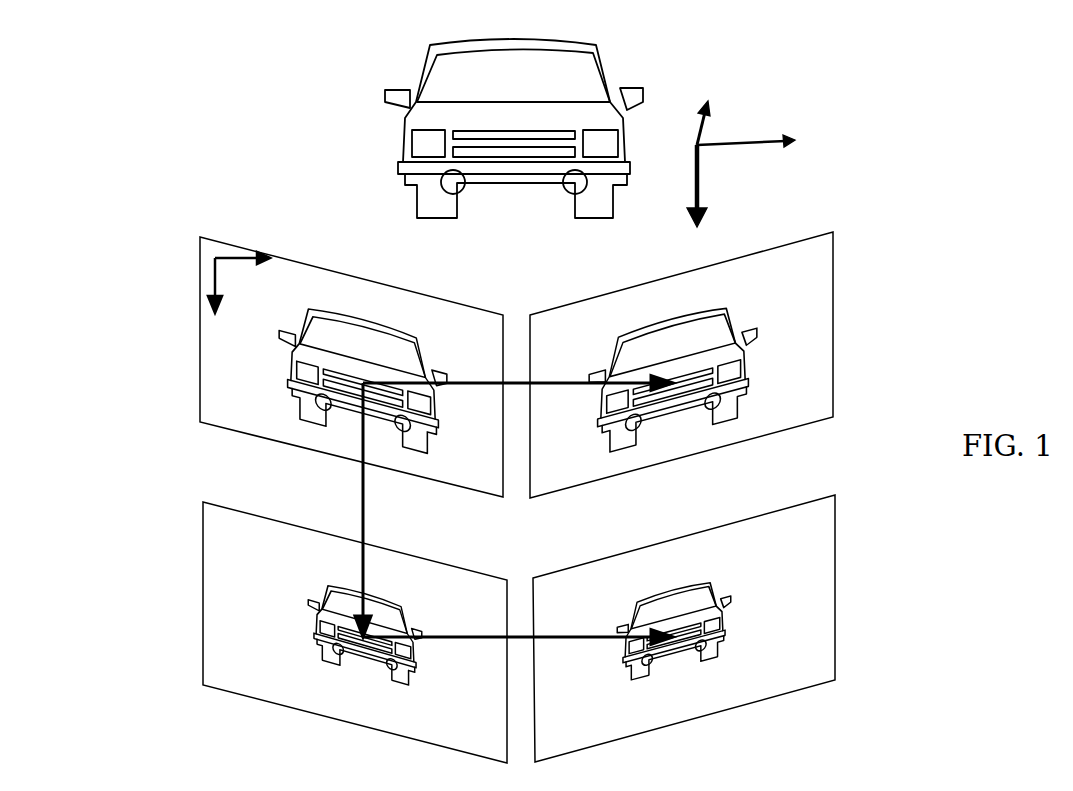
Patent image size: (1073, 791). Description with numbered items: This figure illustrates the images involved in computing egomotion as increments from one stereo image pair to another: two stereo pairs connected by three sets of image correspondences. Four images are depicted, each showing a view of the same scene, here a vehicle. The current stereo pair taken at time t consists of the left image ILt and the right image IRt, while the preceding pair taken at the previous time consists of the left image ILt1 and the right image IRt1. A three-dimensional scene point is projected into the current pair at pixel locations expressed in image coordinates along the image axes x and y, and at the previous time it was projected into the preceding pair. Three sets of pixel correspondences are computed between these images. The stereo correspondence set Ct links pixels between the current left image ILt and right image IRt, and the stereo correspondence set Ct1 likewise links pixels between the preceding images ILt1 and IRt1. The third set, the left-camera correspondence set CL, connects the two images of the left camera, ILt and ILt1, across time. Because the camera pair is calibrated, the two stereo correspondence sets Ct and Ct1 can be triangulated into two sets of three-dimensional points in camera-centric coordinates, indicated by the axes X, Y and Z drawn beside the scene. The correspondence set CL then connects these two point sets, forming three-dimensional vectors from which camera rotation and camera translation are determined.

The left image at time t ILt is at (351, 367).
The right image at time t IRt is at (681, 365).
The left image at time t-1 ILt1 is at (355, 632).
The right image at time t-1 IRt1 is at (684, 628).
The stereo correspondence set at time t Ct is at (518, 372).
The left-camera temporal correspondence set CL is at (378, 510).
The stereo correspondence set at time t-1 Ct1 is at (518, 621).
The image x coordinate axis x is at (242, 273).
The image y coordinate axis y is at (220, 288).
The camera-centric X axis X is at (761, 150).
The camera-centric Y axis Y is at (708, 194).
The camera-centric Z axis Z is at (723, 119).